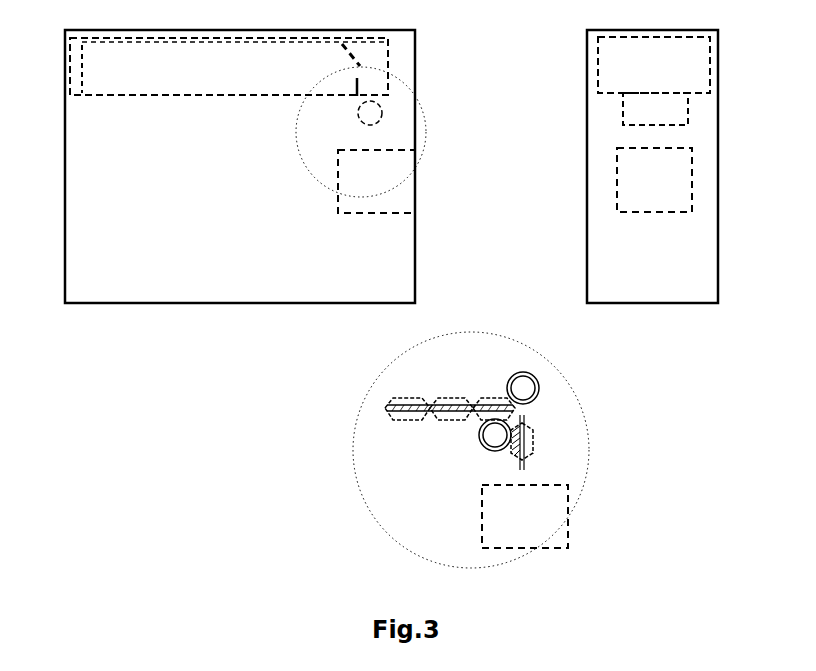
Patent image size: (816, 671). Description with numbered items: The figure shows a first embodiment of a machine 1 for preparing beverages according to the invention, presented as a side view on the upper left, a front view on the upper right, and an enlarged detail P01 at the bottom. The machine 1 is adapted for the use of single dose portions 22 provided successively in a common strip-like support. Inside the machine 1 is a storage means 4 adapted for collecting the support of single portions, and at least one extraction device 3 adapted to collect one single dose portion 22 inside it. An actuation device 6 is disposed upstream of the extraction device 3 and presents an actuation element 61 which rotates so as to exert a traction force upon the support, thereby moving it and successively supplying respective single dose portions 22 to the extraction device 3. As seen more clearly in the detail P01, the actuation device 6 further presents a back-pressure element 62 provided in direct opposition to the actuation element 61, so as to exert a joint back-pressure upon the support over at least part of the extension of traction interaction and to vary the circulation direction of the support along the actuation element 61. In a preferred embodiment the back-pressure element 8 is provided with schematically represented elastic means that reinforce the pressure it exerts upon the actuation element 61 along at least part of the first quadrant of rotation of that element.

The machine for preparing beverages 1 is at (374, 164).
The storage means 4 is at (390, 66).
The back-pressure element 8 is at (357, 70).
The actuation device 6 is at (508, 109).
The detail P01 is at (448, 317).
The extraction device 3 is at (515, 348).
The back-pressure element 62 is at (515, 380).
The actuation element 61 is at (478, 435).
The single dose portion 22 is at (537, 442).